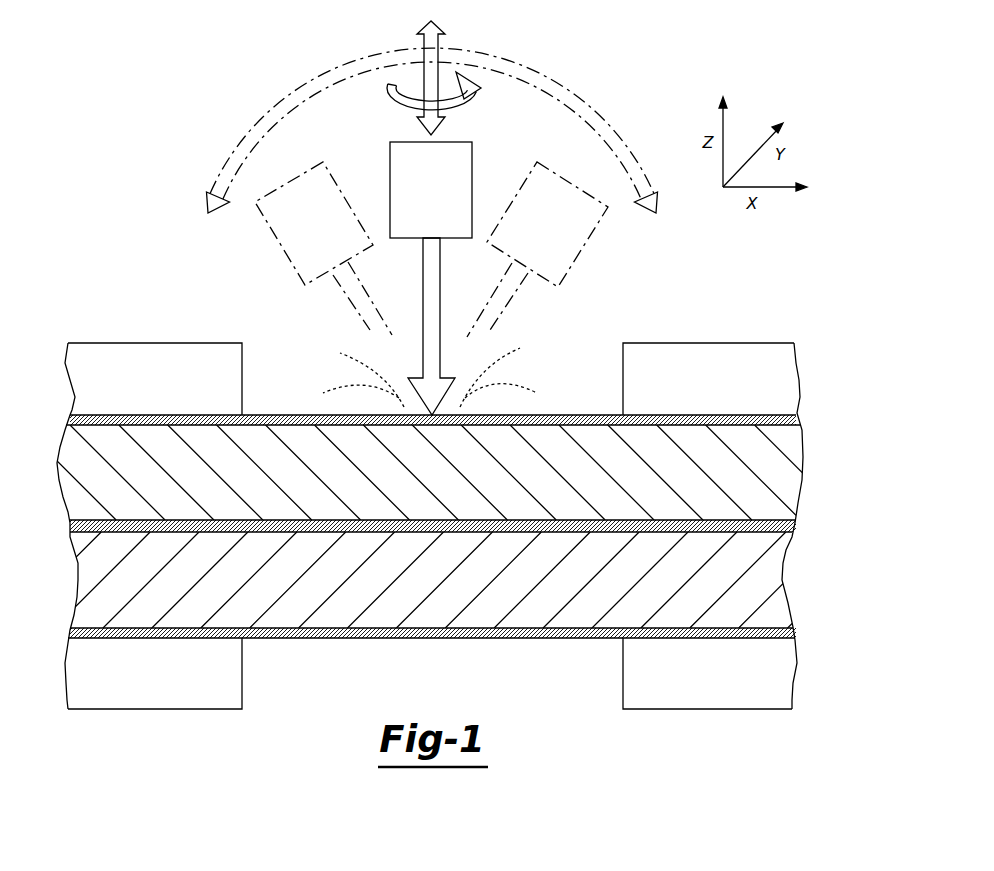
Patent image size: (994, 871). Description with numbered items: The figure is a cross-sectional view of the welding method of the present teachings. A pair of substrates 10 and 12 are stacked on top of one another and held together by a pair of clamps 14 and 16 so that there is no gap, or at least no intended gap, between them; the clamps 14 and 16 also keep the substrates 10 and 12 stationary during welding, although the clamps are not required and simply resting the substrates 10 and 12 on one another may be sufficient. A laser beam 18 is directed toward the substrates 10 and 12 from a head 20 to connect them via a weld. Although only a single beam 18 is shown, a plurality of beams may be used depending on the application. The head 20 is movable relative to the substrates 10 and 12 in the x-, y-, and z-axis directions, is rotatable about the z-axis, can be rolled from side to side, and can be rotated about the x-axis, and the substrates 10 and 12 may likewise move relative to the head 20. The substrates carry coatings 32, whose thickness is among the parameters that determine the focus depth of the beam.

The substrate 10 is at (798, 479).
The substrate 12 is at (782, 577).
The clamp 14 is at (658, 343).
The clamp 16 is at (186, 343).
The laser beam 18 is at (432, 288).
The head 20 is at (467, 172).
The coating 32 is at (800, 422).